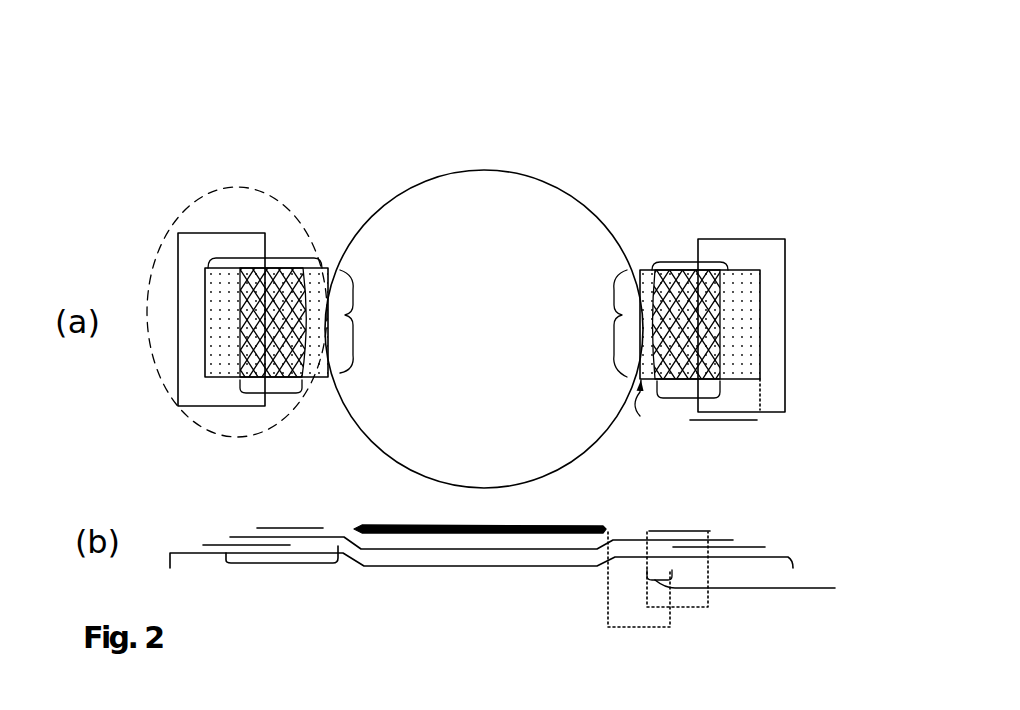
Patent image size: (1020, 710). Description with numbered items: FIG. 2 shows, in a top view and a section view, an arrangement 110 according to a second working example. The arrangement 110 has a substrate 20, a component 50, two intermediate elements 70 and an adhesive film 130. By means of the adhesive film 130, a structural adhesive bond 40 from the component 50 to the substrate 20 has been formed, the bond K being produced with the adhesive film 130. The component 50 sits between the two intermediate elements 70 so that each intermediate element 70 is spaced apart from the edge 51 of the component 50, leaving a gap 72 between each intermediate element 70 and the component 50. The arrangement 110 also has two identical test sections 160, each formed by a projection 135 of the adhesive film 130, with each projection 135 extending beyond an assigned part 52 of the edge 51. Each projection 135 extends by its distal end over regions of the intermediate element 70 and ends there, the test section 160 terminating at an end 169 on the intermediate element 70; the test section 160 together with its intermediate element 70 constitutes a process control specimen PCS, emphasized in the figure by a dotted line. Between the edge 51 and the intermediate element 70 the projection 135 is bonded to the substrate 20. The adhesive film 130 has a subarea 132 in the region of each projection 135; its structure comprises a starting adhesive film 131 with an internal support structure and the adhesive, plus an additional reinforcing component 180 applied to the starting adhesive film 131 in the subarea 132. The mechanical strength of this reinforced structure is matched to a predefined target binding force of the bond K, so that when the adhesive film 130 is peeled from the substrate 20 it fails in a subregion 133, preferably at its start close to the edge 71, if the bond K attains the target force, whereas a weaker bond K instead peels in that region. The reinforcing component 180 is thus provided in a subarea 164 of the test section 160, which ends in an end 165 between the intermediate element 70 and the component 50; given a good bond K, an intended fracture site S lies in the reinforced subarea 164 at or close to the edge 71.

The arrangement 110 is at (797, 117).
The process control specimen PCS is at (237, 183).
The component 50 is at (548, 182).
The substrate 20 is at (626, 204).
The structural adhesive bond 40 is at (422, 556).
The bond K is at (460, 558).
The part of an edge 52 is at (353, 315).
The edge 51 is at (642, 424).
The end 169 is at (202, 306).
The starting adhesive film 131 is at (220, 360).
The adhesive film 130 is at (733, 282).
The intended fracture site S is at (263, 258).
The intermediate element 70 is at (279, 255).
The test section 160 is at (317, 243).
The gap 72 is at (337, 270).
The subarea 132 is at (277, 395).
The subregion 133 is at (777, 591).
The reinforcing component 180 is at (253, 330).
The projection 135 is at (757, 420).
The subarea of the test section 164 is at (702, 240).
The edge 71 is at (693, 262).
The end 165 is at (647, 288).